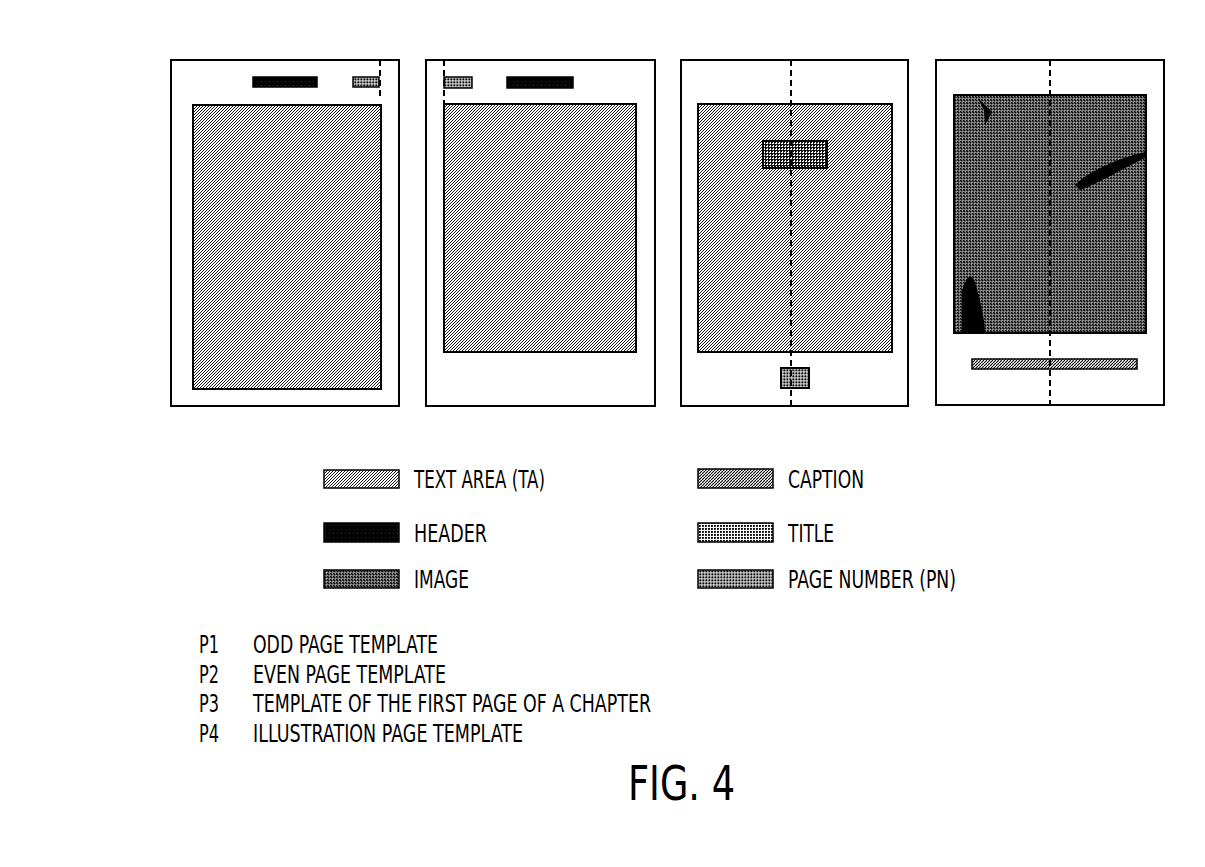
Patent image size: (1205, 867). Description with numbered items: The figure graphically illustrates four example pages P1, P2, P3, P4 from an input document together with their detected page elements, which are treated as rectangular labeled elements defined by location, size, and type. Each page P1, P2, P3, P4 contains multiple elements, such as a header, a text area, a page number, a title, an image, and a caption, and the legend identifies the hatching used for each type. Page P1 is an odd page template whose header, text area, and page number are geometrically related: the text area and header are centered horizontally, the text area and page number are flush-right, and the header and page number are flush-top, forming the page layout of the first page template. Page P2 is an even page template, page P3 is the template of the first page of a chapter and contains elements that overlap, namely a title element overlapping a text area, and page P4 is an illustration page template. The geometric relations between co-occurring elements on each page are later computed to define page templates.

The page P1 is at (263, 231).
The page P2 is at (540, 253).
The page P3 is at (794, 253).
The page P4 is at (1050, 253).